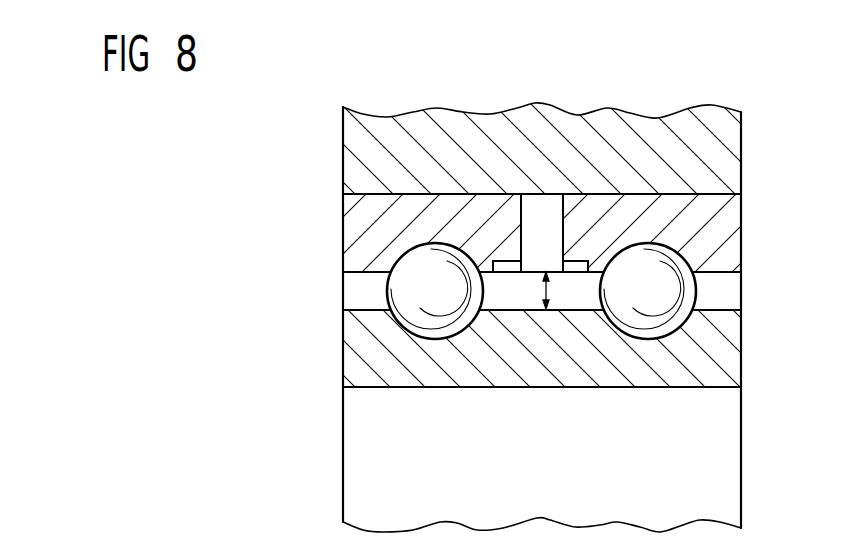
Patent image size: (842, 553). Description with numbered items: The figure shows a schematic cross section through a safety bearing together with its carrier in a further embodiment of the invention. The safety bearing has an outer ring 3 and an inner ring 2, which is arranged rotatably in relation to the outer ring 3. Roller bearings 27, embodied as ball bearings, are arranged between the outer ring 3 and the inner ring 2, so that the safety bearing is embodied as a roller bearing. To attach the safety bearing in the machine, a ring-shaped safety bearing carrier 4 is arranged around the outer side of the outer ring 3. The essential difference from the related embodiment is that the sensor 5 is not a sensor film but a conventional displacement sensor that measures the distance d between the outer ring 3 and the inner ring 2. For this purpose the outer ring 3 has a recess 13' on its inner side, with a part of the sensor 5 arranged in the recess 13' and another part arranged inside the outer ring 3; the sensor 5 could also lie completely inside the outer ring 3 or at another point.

The inner ring 2 is at (536, 347).
The outer ring 3 is at (528, 235).
The safety bearing carrier 4 is at (365, 152).
The sensor 5 is at (548, 210).
The recess 13' is at (536, 159).
The roller bearings 27 is at (432, 320).
The distance d is at (549, 291).